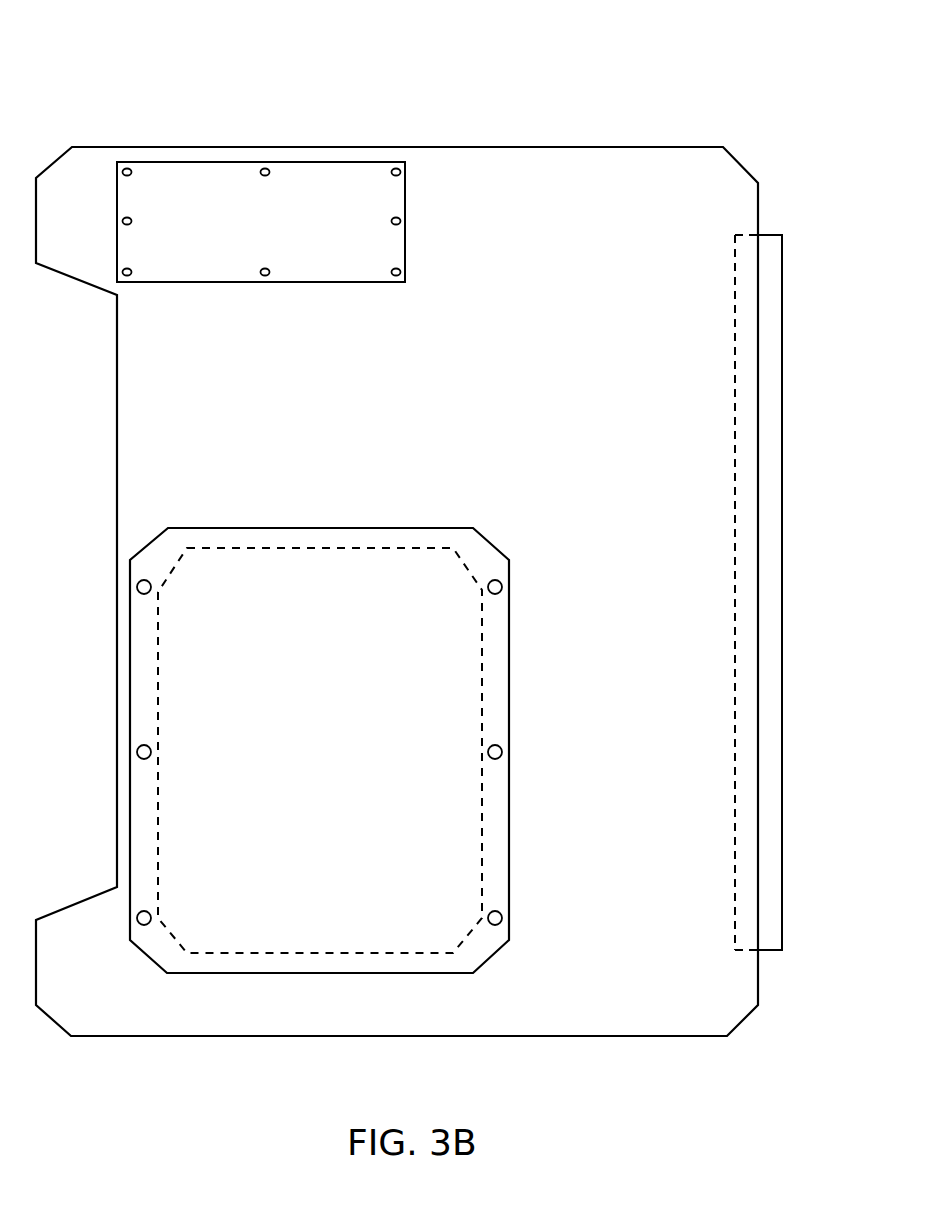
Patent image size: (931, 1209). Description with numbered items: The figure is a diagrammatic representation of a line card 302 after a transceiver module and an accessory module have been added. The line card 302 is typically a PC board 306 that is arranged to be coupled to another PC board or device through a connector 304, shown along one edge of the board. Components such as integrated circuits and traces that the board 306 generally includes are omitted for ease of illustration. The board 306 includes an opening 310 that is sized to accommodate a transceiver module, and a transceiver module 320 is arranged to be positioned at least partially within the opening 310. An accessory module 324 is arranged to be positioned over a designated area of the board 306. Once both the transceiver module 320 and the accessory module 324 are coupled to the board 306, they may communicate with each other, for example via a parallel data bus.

The line card 302 is at (107, 98).
The connector 304 is at (782, 412).
The PC board 306 is at (657, 1022).
The opening 310 is at (372, 555).
The transceiver module 320 is at (503, 638).
The accessory module 324 is at (405, 196).